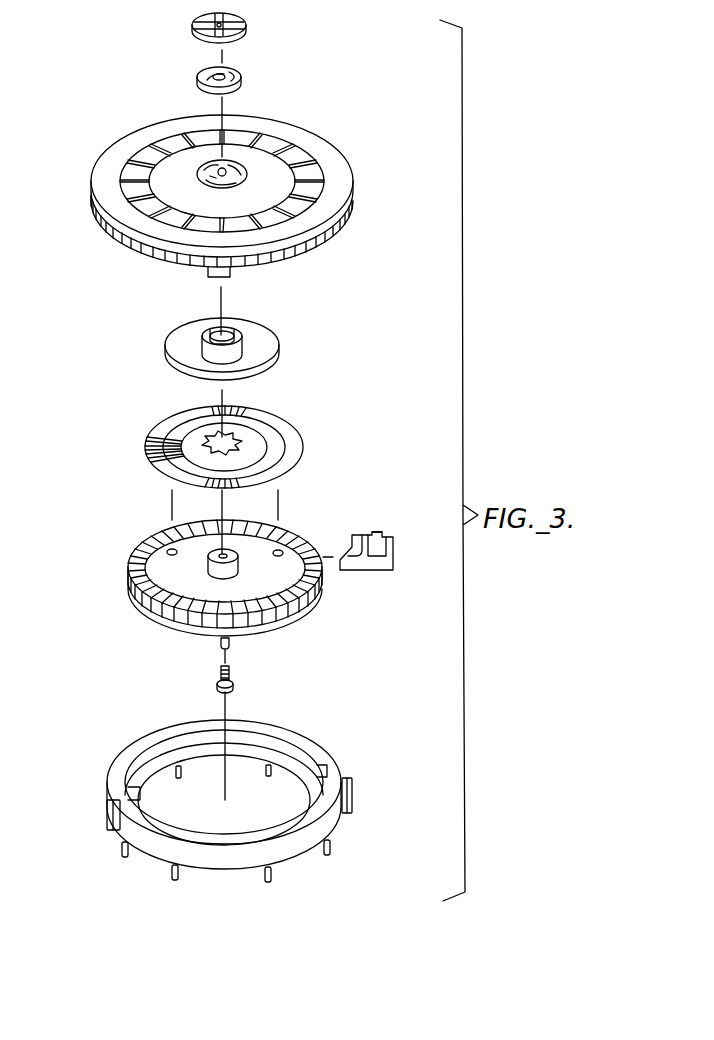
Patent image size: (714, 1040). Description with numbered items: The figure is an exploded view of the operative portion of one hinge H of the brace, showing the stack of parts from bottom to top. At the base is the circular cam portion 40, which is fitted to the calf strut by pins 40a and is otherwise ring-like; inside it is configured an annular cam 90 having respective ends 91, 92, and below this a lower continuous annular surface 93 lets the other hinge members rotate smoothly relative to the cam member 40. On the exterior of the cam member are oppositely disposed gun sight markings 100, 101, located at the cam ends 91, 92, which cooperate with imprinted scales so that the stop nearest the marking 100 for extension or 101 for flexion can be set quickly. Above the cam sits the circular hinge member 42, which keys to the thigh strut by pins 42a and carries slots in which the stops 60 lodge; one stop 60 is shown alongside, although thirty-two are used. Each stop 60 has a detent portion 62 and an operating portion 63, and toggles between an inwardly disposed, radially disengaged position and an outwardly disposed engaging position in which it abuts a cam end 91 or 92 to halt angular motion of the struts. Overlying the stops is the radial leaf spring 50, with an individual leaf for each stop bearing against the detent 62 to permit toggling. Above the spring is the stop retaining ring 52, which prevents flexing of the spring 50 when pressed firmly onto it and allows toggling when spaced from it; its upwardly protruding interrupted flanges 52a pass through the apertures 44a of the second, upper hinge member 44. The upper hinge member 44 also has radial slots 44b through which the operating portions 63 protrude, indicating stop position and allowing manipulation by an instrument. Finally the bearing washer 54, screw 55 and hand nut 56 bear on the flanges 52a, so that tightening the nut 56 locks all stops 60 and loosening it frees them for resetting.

The hand nut 56 is at (243, 14).
The bearing washer 54 is at (242, 73).
The second hinge member 44 is at (352, 190).
The apertures 44a is at (247, 170).
The radial slots 44b is at (130, 163).
The stop retaining ring 52 is at (277, 347).
The interrupted flanges 52a is at (237, 335).
The radial leaf spring 50 is at (280, 427).
The circular hinge member 42 is at (292, 618).
The pins 42a is at (229, 643).
The screw 55 is at (231, 685).
The cam portion 40 is at (293, 842).
The pins 40a is at (268, 883).
The annular cam 90 is at (170, 747).
The cam end 91 is at (130, 790).
The cam end 92 is at (323, 762).
The lower continuous annular surface 93 is at (150, 810).
The gun sight marking 100 is at (107, 815).
The gun sight marking 101 is at (352, 797).
The stop 60 is at (397, 557).
The detent portion 62 is at (352, 550).
The operating portion 63 is at (382, 532).
The hinge H is at (398, 398).